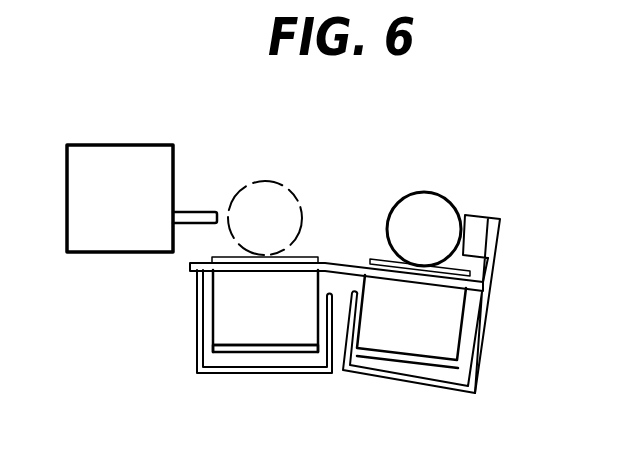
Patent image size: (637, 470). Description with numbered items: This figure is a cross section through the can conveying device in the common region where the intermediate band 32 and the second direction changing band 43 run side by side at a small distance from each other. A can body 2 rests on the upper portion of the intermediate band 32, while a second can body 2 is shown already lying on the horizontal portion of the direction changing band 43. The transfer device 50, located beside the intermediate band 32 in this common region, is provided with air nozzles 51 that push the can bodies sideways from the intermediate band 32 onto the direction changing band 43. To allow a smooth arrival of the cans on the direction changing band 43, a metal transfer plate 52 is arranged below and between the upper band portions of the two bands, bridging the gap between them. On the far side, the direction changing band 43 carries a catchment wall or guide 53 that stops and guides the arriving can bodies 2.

The can body 2 is at (424, 191).
The intermediate band 32 is at (227, 352).
The second direction changing band 43 is at (430, 367).
The transfer device 50 is at (93, 243).
The air nozzle 51 is at (197, 210).
The metal transfer plate 52 is at (340, 261).
The catchment wall or guide 53 is at (472, 222).